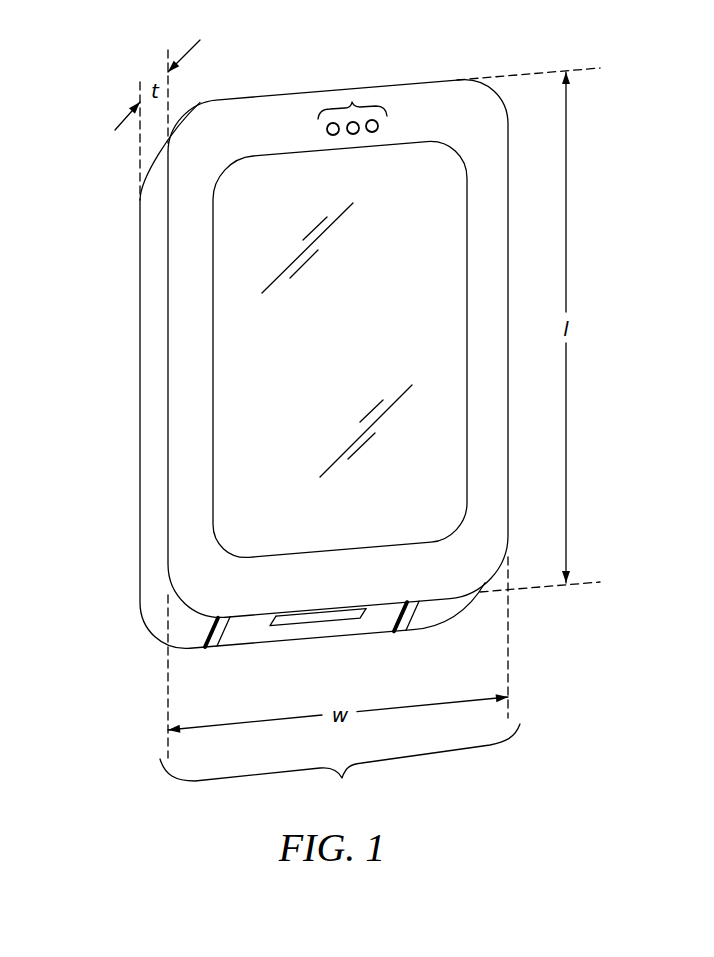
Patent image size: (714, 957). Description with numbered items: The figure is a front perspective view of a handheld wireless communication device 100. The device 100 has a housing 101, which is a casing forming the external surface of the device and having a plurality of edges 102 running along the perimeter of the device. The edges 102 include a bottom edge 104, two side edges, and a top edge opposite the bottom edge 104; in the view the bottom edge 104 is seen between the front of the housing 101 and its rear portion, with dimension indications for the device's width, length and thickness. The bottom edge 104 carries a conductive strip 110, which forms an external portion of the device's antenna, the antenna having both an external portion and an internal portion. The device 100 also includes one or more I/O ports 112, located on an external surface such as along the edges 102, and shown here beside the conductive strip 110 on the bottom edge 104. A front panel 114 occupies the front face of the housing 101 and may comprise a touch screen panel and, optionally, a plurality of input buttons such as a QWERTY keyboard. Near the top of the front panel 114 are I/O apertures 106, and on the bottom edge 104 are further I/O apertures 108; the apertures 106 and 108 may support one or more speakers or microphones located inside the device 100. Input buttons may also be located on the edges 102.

The handheld wireless communication device 100 is at (282, 330).
The housing 101 is at (196, 252).
The edges 102 is at (151, 570).
The bottom edge 104 is at (340, 764).
The I/O apertures 106 is at (353, 103).
The I/O apertures 108 is at (221, 640).
The conductive strip 110 is at (385, 606).
The I/O ports 112 is at (330, 613).
The front panel 114 is at (258, 352).